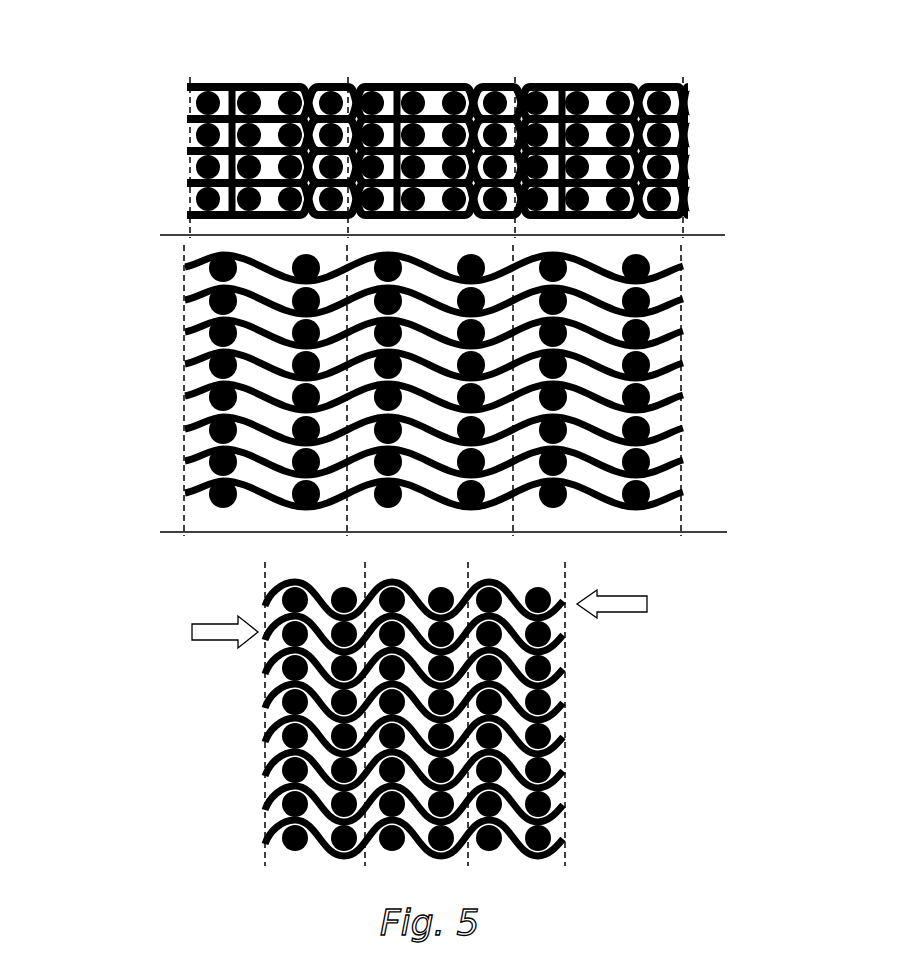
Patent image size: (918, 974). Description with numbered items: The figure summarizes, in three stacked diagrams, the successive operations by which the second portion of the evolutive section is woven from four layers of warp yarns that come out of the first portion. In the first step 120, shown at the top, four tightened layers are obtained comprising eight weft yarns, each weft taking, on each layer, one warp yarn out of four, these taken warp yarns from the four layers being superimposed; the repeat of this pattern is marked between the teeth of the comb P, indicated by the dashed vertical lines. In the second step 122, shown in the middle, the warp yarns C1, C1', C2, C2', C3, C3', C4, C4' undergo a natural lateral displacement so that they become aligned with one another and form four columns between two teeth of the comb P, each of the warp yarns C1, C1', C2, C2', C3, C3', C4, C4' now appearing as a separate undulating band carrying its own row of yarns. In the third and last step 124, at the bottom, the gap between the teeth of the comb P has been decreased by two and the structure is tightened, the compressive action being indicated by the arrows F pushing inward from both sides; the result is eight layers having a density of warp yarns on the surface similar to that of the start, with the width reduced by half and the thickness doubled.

The first step 120 is at (172, 138).
The second step 122 is at (162, 352).
The third and last step 124 is at (217, 725).
The comb P is at (349, 78).
The compressive force F is at (415, 619).
The warp yarn C1 is at (481, 343).
The warp yarn C1' is at (481, 352).
The warp yarn C2 is at (481, 394).
The warp yarn C2' is at (481, 385).
The warp yarn C3 is at (481, 445).
The warp yarn C3' is at (484, 469).
The warp yarn C4 is at (481, 502).
The warp yarn C4' is at (484, 519).